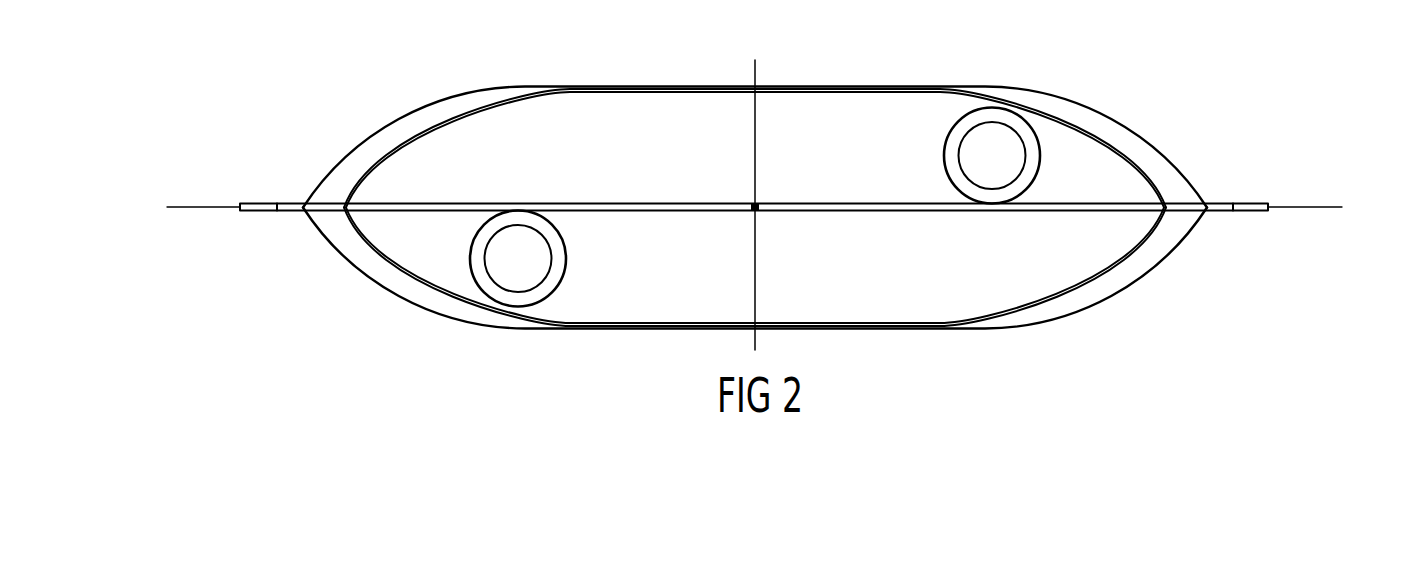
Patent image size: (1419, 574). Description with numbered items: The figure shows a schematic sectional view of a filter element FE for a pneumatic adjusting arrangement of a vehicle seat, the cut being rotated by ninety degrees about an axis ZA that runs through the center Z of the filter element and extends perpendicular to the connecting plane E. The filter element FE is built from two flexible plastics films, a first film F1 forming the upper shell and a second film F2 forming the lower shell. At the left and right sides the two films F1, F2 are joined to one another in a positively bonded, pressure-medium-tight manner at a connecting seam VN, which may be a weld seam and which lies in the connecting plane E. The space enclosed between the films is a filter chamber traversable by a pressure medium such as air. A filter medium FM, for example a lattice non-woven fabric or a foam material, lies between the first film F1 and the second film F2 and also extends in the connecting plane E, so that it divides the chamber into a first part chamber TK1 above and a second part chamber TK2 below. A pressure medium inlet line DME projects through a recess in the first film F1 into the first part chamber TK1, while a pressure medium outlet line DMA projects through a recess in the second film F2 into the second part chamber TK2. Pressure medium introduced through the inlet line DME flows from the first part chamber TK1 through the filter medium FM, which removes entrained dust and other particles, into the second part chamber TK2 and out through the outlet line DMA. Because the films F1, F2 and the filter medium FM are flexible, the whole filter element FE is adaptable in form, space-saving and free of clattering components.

The filter element FE is at (720, 168).
The first film F1 is at (1140, 149).
The second film F2 is at (1166, 241).
The first part chamber TK1 is at (1065, 150).
The second part chamber TK2 is at (877, 282).
The filter medium FM is at (601, 192).
The connecting seam VN is at (283, 193).
The connecting plane E is at (766, 208).
The axis ZA is at (755, 187).
The center Z is at (750, 206).
The pressure medium inlet line DME is at (940, 122).
The pressure medium outlet line DMA is at (565, 298).